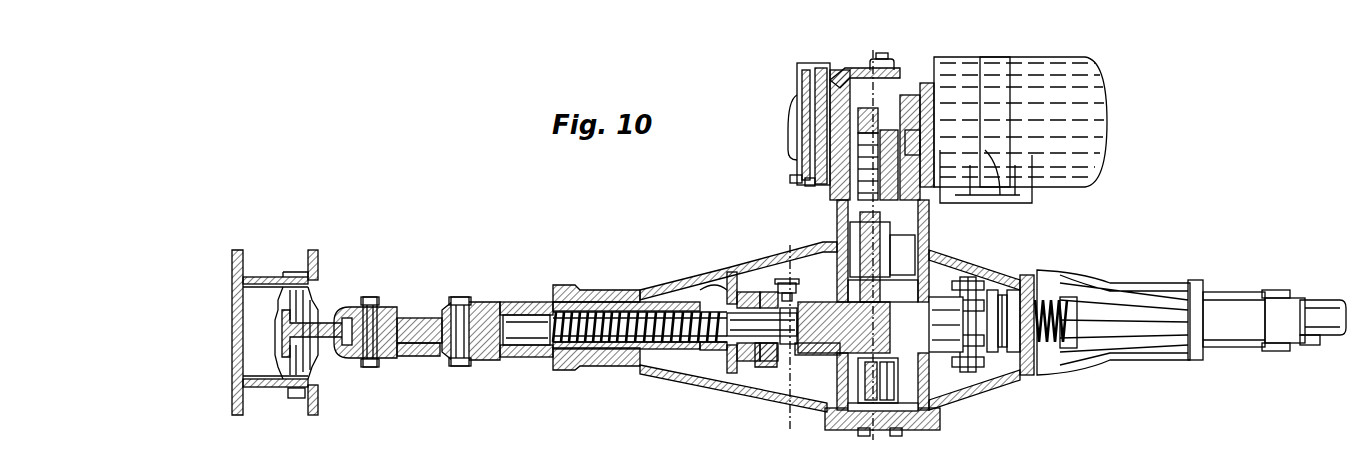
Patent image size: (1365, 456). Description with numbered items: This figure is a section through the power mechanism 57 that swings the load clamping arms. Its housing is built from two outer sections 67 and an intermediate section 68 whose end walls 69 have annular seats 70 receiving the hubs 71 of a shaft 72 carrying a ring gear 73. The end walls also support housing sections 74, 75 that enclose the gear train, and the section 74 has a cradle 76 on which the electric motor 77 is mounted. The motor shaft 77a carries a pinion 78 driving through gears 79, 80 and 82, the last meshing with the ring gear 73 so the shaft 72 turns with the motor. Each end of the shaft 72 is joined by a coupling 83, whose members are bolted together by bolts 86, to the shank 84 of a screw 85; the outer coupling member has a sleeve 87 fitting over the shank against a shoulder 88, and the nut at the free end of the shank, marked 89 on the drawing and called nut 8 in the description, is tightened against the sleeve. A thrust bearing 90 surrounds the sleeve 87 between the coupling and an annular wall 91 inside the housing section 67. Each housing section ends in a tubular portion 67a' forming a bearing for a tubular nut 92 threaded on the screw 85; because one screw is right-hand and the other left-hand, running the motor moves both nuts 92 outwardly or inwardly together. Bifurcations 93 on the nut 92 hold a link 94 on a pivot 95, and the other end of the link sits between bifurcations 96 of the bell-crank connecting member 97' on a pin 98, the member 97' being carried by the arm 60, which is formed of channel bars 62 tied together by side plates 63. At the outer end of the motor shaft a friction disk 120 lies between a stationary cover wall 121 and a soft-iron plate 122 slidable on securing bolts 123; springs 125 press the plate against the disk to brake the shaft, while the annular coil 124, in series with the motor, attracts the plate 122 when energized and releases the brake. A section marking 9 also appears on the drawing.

The nut 8 is at (789, 335).
The section line 9- 9 is at (874, 45).
The power mechanism 57 is at (1016, 268).
The arms 60 is at (276, 338).
The channel bars 62 is at (262, 277).
The side plates 63 is at (236, 328).
The outer housing sections 67 is at (760, 390).
The tubular portion 67a' is at (878, 330).
The intermediate housing sections 68 is at (840, 430).
The end walls 69 is at (926, 262).
The annular seats 70 is at (950, 297).
The hubs 71 is at (838, 356).
The shaft 72 is at (884, 360).
The ring gear 73 is at (893, 393).
The housing section 74 is at (926, 83).
The housing section 75 is at (850, 72).
The cradle 76 is at (960, 196).
The electric motor 77 is at (1032, 66).
The motor shaft 77a is at (905, 84).
The pinion 78 is at (870, 112).
The gear 79 is at (889, 144).
The gear 80 is at (921, 140).
The gear 82 is at (850, 258).
The coupling 83 is at (765, 367).
The screw shank 84 is at (748, 292).
The screw 85 is at (535, 346).
The bolts 86 is at (786, 280).
The sleeve portion 87 is at (735, 348).
The shoulder 88 is at (725, 340).
The worm shaft 89 is at (780, 325).
The thrust bearing 90 is at (770, 293).
The annular wall 91 is at (727, 300).
The tubular nut 92 is at (525, 298).
The bifurcations 93 is at (442, 355).
The link 94 is at (418, 318).
The pivot 95 is at (462, 298).
The bifurcations 96 is at (400, 356).
The connecting member 97' is at (365, 318).
The pin 98 is at (298, 398).
The friction disk 120 is at (800, 66).
The stationary wall 121 is at (789, 108).
The annular plate 122 is at (810, 186).
The securing bolts 123 is at (794, 183).
The annular coil 124 is at (826, 72).
The springs 125 is at (810, 70).